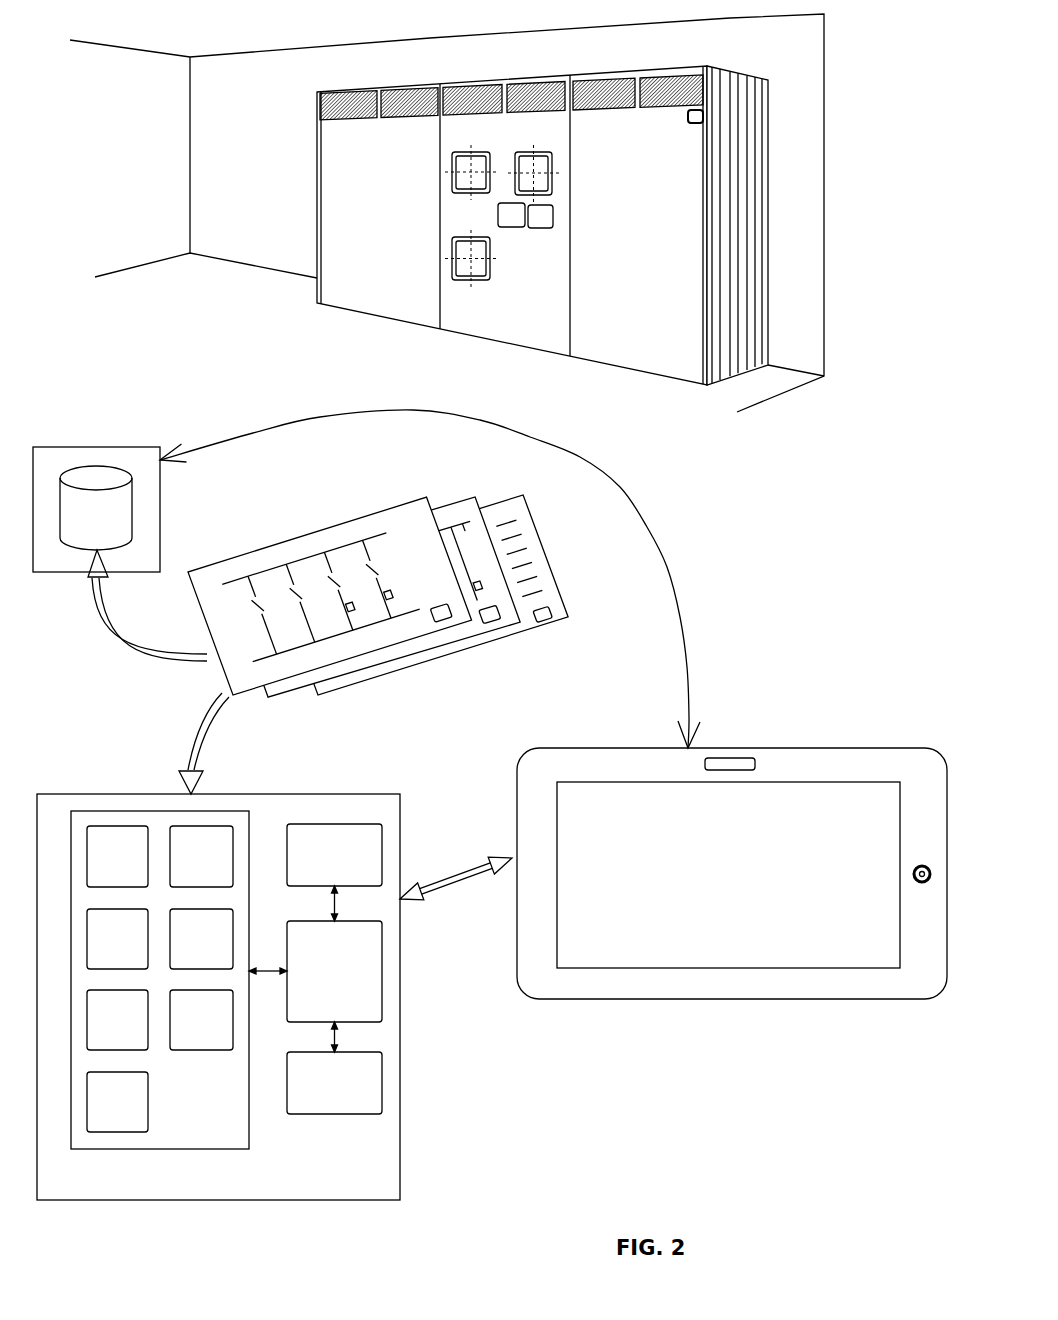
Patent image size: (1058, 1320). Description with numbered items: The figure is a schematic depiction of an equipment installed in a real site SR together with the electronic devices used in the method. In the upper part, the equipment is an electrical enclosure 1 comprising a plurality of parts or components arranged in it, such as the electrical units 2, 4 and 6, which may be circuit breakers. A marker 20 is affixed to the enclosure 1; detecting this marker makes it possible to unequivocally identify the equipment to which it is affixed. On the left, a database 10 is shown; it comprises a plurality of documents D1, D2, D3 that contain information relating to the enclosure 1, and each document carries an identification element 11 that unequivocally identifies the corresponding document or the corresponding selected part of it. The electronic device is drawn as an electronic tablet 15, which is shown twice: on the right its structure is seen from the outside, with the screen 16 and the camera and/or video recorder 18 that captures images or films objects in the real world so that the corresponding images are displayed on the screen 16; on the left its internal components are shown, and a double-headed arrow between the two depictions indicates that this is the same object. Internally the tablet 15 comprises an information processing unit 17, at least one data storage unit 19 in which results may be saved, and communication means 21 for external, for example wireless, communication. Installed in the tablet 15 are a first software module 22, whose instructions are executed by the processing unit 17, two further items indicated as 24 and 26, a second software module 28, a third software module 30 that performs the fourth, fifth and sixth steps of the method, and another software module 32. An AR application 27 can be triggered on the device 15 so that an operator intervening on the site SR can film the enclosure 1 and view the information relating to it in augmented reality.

The electrical enclosure 1 is at (284, 200).
The electrical unit 2 is at (437, 265).
The electrical unit 4 is at (437, 178).
The electrical unit 6 is at (553, 158).
The marker 20 is at (704, 119).
The database 10 is at (62, 445).
The identification element 11 is at (447, 628).
The electronic tablet 15 is at (377, 1185).
The screen 16 is at (739, 888).
The information processing unit 17 is at (322, 990).
The camera and/or video recorder 18 is at (322, 1100).
The data storage unit 19 is at (236, 1132).
The communication means 21 is at (322, 872).
The first software module 22 is at (105, 873).
The module indicated in the electronic device 24 is at (189, 873).
The module indicated in the electronic device 26 is at (105, 956).
The AR application 27 is at (189, 956).
The second software module 28 is at (105, 1037).
The third software module 30 is at (189, 1037).
The other software module 32 is at (105, 1119).
The document D1 is at (386, 505).
The document D2 is at (453, 502).
The document D3 is at (502, 497).
The real site SR is at (223, 98).